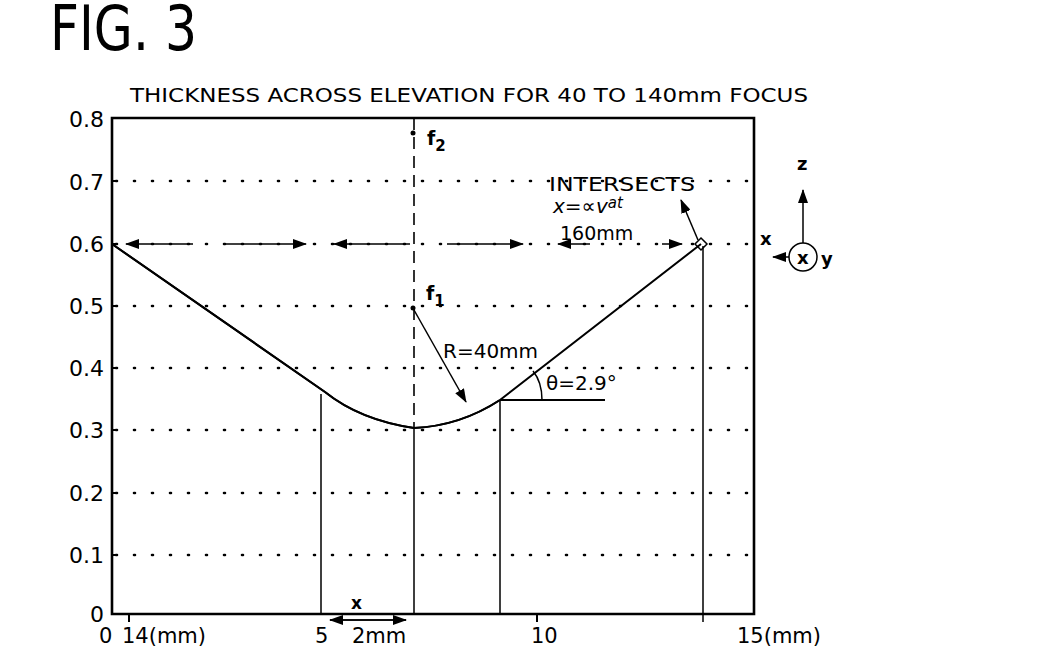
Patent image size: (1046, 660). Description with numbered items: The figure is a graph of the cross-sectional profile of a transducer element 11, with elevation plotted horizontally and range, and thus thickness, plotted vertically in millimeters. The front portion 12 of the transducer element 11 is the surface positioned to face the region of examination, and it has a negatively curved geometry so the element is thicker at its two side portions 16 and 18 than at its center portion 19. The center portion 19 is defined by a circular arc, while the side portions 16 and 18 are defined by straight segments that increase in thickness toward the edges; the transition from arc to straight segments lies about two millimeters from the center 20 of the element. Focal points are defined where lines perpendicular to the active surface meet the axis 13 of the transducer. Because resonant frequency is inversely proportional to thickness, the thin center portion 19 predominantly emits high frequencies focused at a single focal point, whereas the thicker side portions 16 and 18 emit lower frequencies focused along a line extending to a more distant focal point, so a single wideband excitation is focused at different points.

The transducer element 11 is at (254, 206).
The front portion 12 is at (265, 340).
The axis 13 is at (411, 205).
The side portion 16 is at (216, 245).
The side portion 18 is at (620, 245).
The center portion 19 is at (428, 245).
The center 20 is at (407, 391).